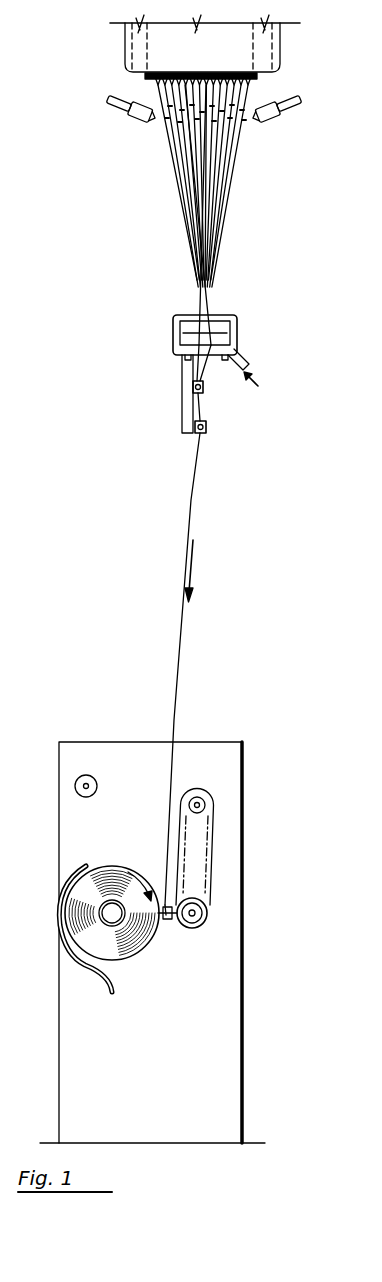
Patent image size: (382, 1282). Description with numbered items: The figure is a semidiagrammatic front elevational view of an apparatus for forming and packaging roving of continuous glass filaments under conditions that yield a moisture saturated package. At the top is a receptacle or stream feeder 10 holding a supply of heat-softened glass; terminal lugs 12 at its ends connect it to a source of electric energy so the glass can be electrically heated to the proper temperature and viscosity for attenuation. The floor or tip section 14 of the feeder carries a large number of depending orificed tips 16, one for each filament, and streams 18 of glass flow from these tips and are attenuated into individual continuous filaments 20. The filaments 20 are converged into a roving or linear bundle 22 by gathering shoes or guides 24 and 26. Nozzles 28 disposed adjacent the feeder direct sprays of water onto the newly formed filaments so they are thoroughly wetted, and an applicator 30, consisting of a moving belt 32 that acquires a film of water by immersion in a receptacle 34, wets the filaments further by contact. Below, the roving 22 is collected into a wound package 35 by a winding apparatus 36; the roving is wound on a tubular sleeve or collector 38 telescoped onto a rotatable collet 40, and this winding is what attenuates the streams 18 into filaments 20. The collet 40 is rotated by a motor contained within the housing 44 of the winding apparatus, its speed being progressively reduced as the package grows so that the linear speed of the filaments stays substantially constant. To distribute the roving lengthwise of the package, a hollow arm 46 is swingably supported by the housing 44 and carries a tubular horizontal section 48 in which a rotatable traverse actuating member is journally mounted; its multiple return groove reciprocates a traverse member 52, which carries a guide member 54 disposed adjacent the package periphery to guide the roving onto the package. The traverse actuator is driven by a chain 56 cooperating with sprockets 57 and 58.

The stream feeder 10 is at (284, 47).
The terminal lugs 12 is at (128, 42).
The floor or tip section 14 is at (258, 77).
The orificed tips 16 is at (162, 88).
The streams of glass 18 is at (196, 88).
The filaments 20 is at (200, 176).
The roving 22 is at (194, 481).
The gathering shoe 24 is at (204, 390).
The gathering shoe 26 is at (206, 430).
The nozzles 28 is at (130, 116).
The applicator 30 is at (222, 315).
The moving belt 32 is at (222, 332).
The receptacle 34 is at (240, 349).
The wound package 35 is at (130, 864).
The winding apparatus 36 is at (243, 742).
The tubular sleeve or collector 38 is at (113, 900).
The winding collet 40 is at (108, 912).
The housing 44 is at (245, 963).
The hollow arm 46 is at (212, 838).
The tubular horizontal section 48 is at (182, 905).
The traverse member 52 is at (195, 928).
The guide member 54 is at (166, 918).
The chain 56 is at (208, 856).
The sprocket 57 is at (208, 815).
The sprocket 58 is at (209, 900).